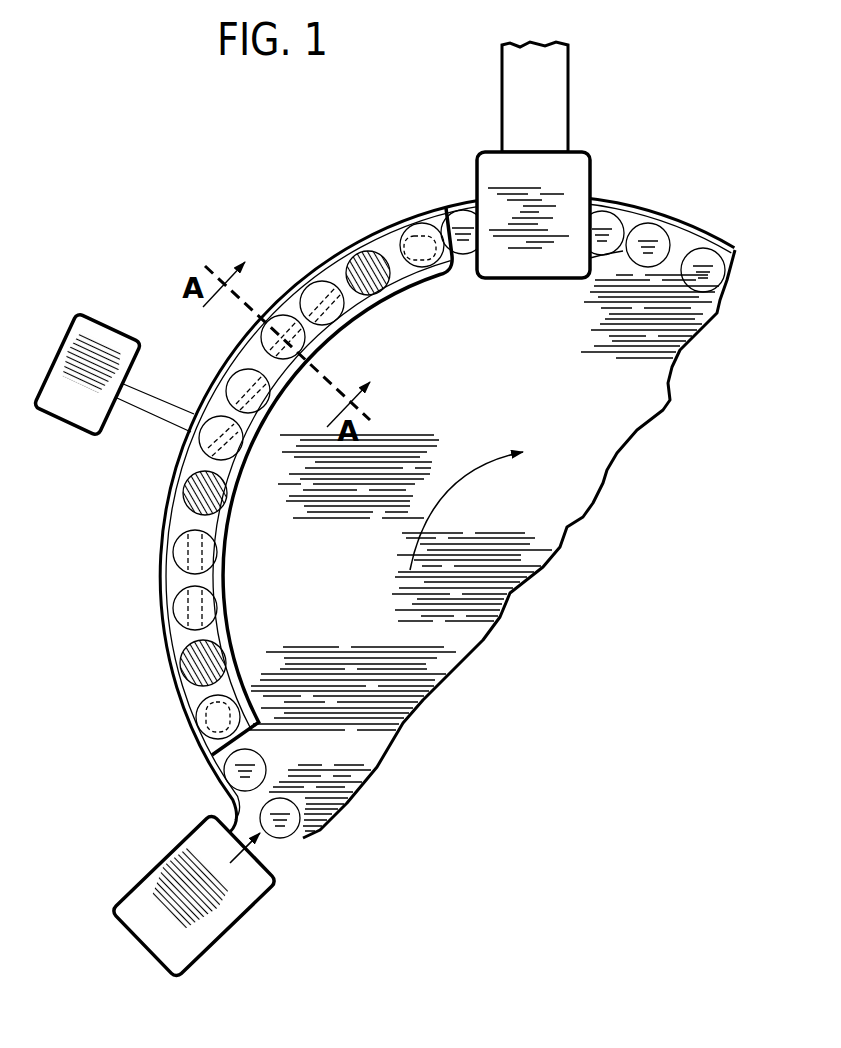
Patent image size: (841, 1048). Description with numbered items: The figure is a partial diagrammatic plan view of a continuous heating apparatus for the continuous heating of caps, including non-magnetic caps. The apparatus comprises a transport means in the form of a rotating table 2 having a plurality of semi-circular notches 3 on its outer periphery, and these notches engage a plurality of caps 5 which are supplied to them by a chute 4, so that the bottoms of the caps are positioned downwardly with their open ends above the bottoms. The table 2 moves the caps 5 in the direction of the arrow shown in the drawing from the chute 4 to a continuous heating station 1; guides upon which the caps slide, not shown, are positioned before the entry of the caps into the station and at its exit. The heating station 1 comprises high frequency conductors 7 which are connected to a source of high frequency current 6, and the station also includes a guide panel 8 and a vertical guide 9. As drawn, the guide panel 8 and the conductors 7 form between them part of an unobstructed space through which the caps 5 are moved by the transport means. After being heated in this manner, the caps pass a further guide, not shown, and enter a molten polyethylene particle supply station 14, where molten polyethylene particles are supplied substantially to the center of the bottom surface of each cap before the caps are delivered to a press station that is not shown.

The continuous heating station 1 is at (413, 502).
The rotating table 2 is at (557, 513).
The semi-circular notches 3 is at (422, 267).
The chute 4 is at (168, 872).
The caps 5 is at (307, 283).
The source of high frequency current 6 is at (97, 337).
The high frequency conductors 7 is at (230, 377).
The guide panel 8 is at (250, 469).
The vertical guide 9 is at (377, 232).
The molten polyethylene particle supply station 14 is at (497, 176).